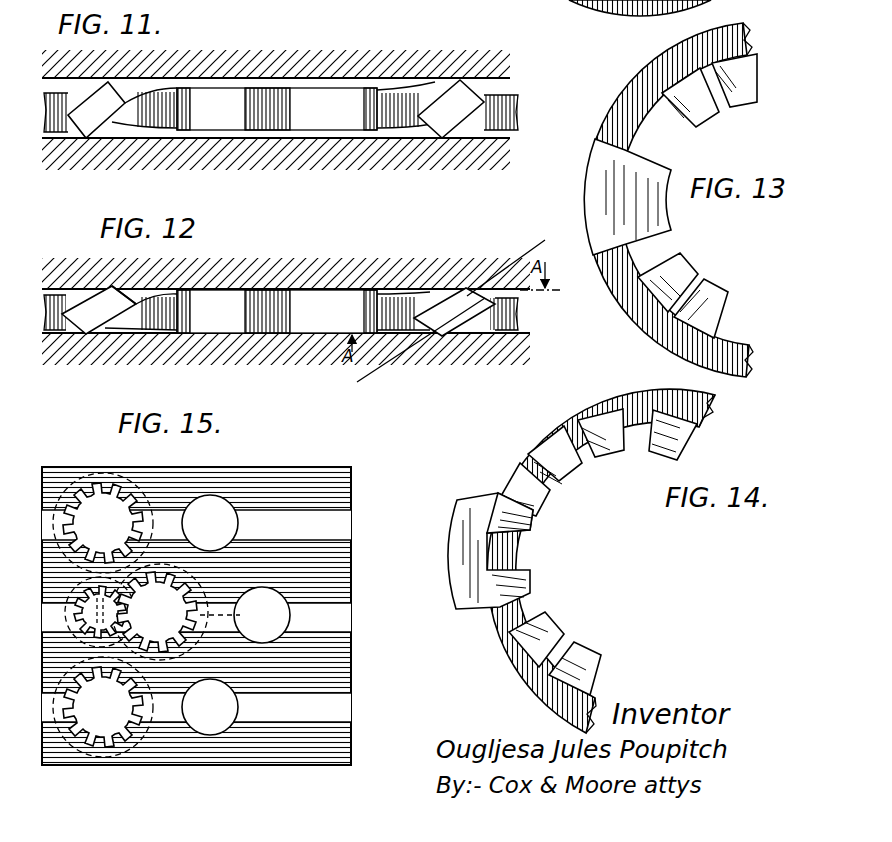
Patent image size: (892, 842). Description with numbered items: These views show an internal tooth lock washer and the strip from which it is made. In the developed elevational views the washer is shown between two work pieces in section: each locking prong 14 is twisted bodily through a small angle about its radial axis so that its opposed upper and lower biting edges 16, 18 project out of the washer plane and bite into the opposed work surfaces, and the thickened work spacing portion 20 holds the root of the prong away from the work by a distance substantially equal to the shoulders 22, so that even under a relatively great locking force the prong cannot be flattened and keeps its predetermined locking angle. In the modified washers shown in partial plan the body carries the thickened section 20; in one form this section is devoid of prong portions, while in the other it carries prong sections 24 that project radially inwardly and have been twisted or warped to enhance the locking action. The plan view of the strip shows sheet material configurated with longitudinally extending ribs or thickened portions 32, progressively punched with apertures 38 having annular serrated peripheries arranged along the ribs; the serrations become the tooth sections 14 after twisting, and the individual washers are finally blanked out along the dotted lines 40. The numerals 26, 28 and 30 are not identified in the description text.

In FIG. 11, the locking prong 14 is at (447, 100).
In FIG. 12, the upper biting edge 16 is at (128, 303).
In FIG. 11, the lower biting edge 18 is at (440, 137).
In FIG. 12, the lower biting edge 18 is at (80, 337).
In FIG. 11, the work spacing portion 20 is at (272, 102).
In FIG. 12, the work spacing portion 20 is at (284, 300).
In FIG. 13, the work spacing portion 20 is at (662, 226).
In FIG. 14, the work spacing portion 20 is at (466, 595).
In FIG. 12, the shoulder 22 is at (398, 302).
In FIG. 11, the prong section 24 is at (218, 122).
In FIG. 12, the prong section 24 is at (340, 305).
In FIG. 14, the tooth 26 is at (520, 527).
In FIG. 15, the plate 28 is at (354, 470).
In FIG. 15, the rib 30 is at (330, 570).
In FIG. 15, the thickened portion 32 is at (335, 525).
In FIG. 15, the aperture 38 is at (118, 725).
In FIG. 15, the dotted line 40 is at (245, 615).